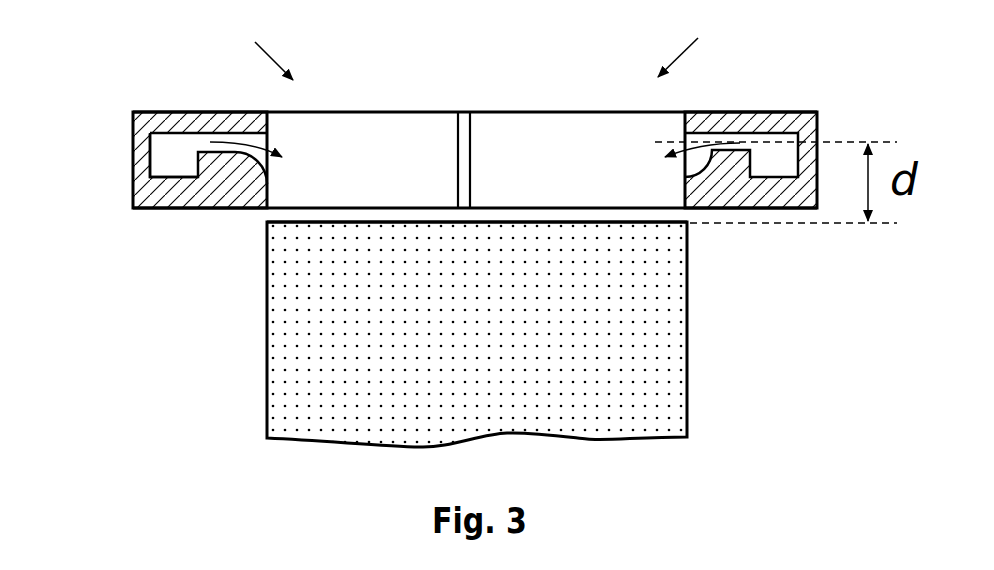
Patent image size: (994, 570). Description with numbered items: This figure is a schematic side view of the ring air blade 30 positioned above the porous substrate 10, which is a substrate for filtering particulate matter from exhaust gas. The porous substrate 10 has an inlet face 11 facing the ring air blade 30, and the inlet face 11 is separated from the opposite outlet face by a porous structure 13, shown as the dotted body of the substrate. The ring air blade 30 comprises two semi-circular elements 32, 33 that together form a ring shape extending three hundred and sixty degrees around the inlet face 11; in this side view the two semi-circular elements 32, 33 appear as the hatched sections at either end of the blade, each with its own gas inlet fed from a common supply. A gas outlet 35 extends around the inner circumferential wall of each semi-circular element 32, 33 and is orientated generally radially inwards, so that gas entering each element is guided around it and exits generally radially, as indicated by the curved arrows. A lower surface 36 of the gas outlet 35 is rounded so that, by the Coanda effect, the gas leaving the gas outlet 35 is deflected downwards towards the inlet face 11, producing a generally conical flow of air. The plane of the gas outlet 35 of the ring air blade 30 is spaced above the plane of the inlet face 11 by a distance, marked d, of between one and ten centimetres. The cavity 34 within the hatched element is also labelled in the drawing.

The porous substrate 10 is at (698, 342).
The inlet face 11 is at (308, 228).
The porous structure 13 is at (288, 385).
The ring air blade 30 is at (792, 95).
The semi-circular element 32 is at (803, 123).
The semi-circular element 33 is at (137, 120).
The recess 34 is at (168, 165).
The gas outlet 35 is at (230, 137).
The lower surface 36 is at (247, 162).